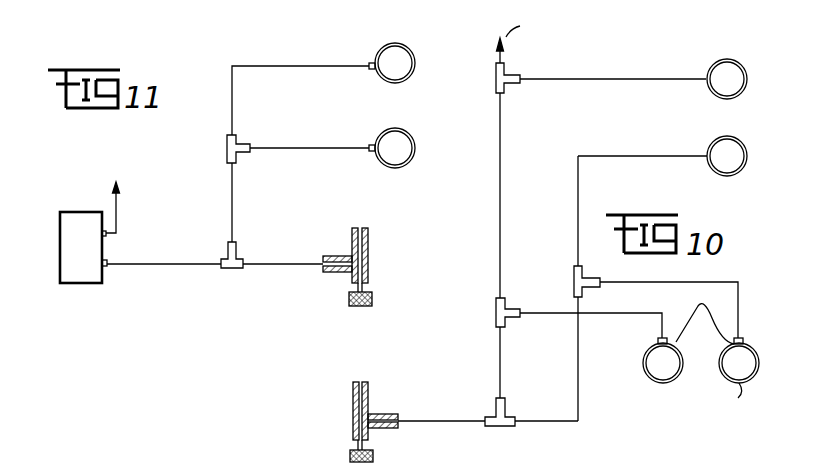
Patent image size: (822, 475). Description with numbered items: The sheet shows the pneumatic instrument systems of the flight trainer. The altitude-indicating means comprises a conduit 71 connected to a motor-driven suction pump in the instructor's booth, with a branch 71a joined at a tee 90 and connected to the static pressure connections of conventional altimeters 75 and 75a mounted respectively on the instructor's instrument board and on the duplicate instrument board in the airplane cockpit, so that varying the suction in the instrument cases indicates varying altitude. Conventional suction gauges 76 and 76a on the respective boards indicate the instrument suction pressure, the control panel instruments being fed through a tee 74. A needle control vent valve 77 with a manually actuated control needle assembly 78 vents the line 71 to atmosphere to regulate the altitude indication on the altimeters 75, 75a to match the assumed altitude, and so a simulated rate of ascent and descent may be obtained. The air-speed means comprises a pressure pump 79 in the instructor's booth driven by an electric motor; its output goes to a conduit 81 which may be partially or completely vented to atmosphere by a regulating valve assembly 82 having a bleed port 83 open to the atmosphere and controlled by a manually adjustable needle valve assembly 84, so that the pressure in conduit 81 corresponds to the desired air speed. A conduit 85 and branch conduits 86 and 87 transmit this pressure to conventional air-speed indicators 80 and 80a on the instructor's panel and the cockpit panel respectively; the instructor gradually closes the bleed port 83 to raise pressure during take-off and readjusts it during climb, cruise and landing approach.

In FIG. 10, the conduit 71 is at (508, 55).
In FIG. 10, the branch 71a is at (578, 366).
In FIG. 10, the control panel tee 74 is at (626, 277).
In FIG. 10, the altimeter 75 is at (742, 347).
In FIG. 10, the altimeter 75a is at (740, 150).
In FIG. 10, the suction gauge 76 is at (643, 357).
In FIG. 10, the suction gauge 76a is at (740, 72).
In FIG. 10, the needle control vent valve 77 is at (369, 393).
In FIG. 10, the control needle assembly 78 is at (366, 462).
In FIG. 10, the tee 90 is at (488, 436).
In FIG. 11, the pressure pump 79 is at (66, 250).
In FIG. 11, the air-speed indicator 80 is at (413, 141).
In FIG. 11, the air-speed indicator 80a is at (413, 55).
In FIG. 11, the conduit 81 is at (163, 266).
In FIG. 11, the regulating valve assembly 82 is at (370, 259).
In FIG. 11, the bleed port 83 is at (360, 230).
In FIG. 11, the needle valve assembly 84 is at (362, 306).
In FIG. 11, the conduit 85 is at (236, 213).
In FIG. 11, the branch conduit 86 is at (309, 137).
In FIG. 11, the branch conduit 87 is at (256, 68).